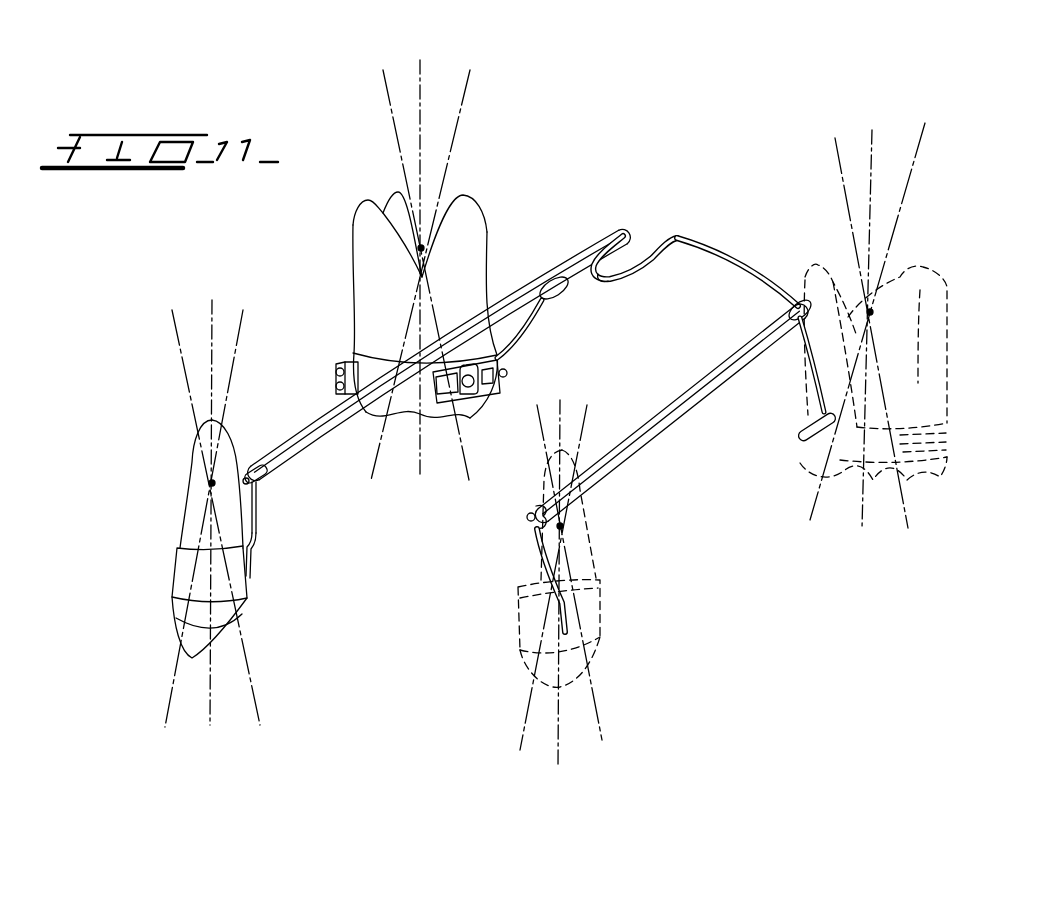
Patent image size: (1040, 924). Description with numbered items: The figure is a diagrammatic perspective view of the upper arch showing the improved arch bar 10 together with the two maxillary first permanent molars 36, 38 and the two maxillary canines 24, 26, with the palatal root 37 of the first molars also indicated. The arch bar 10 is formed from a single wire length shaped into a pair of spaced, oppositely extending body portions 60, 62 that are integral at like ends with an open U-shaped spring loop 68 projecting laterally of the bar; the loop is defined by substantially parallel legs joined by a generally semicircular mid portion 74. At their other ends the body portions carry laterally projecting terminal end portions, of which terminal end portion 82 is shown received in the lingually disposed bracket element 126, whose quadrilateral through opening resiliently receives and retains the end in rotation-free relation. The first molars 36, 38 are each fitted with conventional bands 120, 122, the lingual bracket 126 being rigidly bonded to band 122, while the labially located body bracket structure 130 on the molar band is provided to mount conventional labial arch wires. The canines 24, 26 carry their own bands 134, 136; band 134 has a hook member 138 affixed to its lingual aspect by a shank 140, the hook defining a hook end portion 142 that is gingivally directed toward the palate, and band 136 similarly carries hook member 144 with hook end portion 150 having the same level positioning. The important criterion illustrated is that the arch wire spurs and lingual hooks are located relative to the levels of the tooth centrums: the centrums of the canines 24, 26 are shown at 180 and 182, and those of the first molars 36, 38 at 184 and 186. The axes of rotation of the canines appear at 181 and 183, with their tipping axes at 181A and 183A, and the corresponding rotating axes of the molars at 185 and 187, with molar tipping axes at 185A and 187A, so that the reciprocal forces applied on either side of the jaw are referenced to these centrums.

The arch bar 10 is at (712, 227).
The canine tooth 24 is at (188, 467).
The canine tooth 26 is at (590, 539).
The first molar 36 is at (358, 240).
The palatal root 37 is at (478, 225).
The first molar 38 is at (933, 393).
The arch wire body portion 60 is at (727, 260).
The arch wire body portion 62 is at (578, 258).
The open U-shaped spring loop 68 is at (641, 260).
The semicircular mid portion 74 is at (606, 286).
The terminal end portion 82 is at (474, 394).
The band 120 is at (800, 445).
The band 122 is at (365, 370).
The bracket element 126 is at (505, 375).
The labial body bracket structure 130 is at (944, 458).
The band 134 is at (175, 575).
The band 136 is at (520, 613).
The hook member 138 is at (260, 506).
The shank 140 is at (256, 540).
The hook end portion 142 is at (249, 466).
The hook member 144 is at (532, 540).
The hook end portion 150 is at (527, 511).
The centrum 180 is at (208, 483).
The axis of rotation 181 is at (215, 316).
The tipping axis 181A is at (172, 318).
The centrum 182 is at (565, 522).
The axis of rotation 183 is at (560, 740).
The tipping axis 183A is at (523, 740).
The centrum 184 is at (421, 248).
The rotating axis 185 is at (425, 70).
The tipping axis 185A is at (466, 86).
The centrum 186 is at (872, 312).
The rotating axis 187 is at (873, 135).
The tipping axis 187A is at (835, 138).